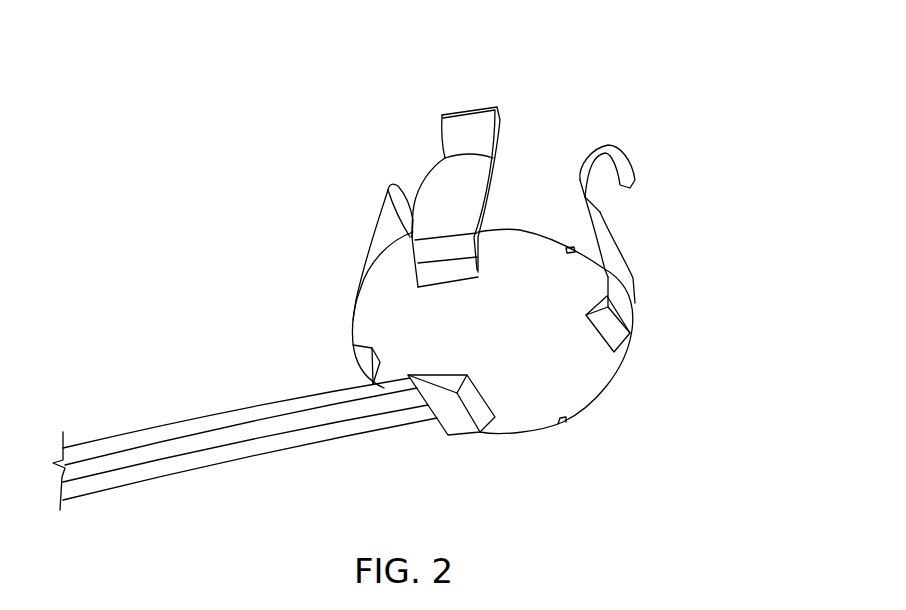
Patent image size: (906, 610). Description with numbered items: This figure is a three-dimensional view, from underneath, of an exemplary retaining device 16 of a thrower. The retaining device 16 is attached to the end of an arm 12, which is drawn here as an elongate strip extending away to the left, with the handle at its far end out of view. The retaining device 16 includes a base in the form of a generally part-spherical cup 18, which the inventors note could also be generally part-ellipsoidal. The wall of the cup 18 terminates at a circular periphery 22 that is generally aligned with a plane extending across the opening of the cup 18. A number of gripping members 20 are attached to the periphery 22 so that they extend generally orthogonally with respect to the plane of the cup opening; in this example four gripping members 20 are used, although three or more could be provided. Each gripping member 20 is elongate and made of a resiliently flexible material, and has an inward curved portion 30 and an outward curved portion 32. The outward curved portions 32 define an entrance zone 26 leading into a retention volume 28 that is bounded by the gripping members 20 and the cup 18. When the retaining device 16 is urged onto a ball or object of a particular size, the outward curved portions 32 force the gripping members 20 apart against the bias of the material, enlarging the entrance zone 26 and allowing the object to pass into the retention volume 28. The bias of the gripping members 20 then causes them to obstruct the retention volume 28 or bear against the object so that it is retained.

The arm 12 is at (127, 435).
The retaining device 16 is at (675, 297).
The cup 18 is at (622, 386).
The gripping member 20 is at (446, 113).
The circular periphery 22 is at (522, 232).
The entrance zone 26 is at (519, 103).
The retention volume 28 is at (417, 171).
The inward curved portion 30 is at (437, 204).
The outward curved portion 32 is at (630, 188).